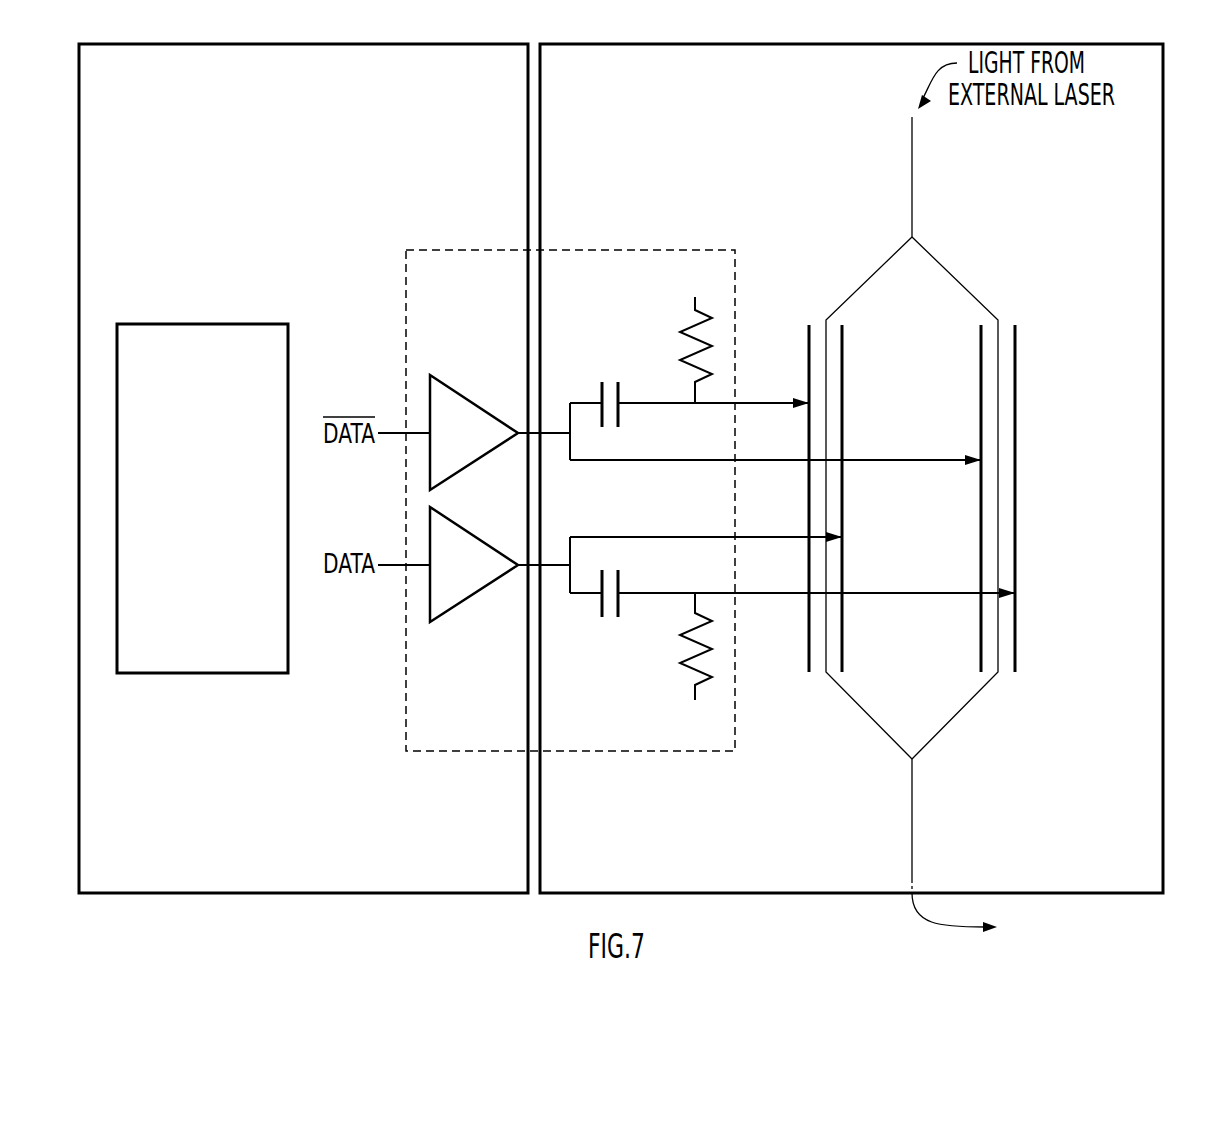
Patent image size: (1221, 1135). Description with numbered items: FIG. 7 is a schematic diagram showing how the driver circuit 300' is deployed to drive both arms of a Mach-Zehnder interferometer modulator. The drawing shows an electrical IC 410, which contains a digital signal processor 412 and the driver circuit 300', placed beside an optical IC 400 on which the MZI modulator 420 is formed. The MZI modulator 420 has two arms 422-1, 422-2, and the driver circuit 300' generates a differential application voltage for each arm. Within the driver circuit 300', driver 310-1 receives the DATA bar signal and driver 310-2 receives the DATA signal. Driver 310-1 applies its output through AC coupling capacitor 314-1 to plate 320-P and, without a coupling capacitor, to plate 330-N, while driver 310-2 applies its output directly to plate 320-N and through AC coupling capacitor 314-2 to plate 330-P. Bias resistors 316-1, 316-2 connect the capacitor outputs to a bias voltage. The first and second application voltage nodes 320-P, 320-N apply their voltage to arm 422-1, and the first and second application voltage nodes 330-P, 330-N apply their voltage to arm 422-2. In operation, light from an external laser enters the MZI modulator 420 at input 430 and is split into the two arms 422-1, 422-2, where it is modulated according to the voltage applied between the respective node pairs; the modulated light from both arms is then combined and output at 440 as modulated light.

The optical IC 400 is at (1164, 127).
The electrical IC 410 is at (79, 127).
The digital signal processor (DSP) 412 is at (140, 324).
The driver circuit 300' is at (710, 473).
The driver 310-1 is at (463, 397).
The driver 310-2 is at (463, 600).
The AC coupling capacitor 314-1 is at (643, 380).
The AC coupling capacitor 314-2 is at (618, 605).
The first bias resistor 316-1 is at (680, 338).
The second bias resistor 316-2 is at (680, 652).
The first application voltage node 320-P is at (808, 368).
The second application voltage node 320-N is at (842, 640).
The second application voltage node 330-N is at (981, 613).
The first application voltage node 330-P is at (1015, 652).
The MZI modulator 420 is at (970, 532).
The arm 422-1 is at (863, 285).
The arm 422-2 is at (962, 285).
The light input 430 is at (912, 202).
The modulated light output 440 is at (1048, 853).